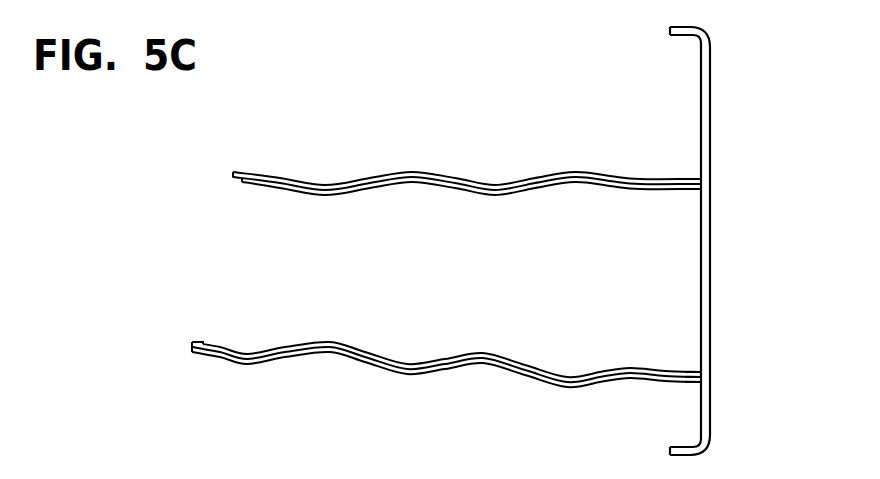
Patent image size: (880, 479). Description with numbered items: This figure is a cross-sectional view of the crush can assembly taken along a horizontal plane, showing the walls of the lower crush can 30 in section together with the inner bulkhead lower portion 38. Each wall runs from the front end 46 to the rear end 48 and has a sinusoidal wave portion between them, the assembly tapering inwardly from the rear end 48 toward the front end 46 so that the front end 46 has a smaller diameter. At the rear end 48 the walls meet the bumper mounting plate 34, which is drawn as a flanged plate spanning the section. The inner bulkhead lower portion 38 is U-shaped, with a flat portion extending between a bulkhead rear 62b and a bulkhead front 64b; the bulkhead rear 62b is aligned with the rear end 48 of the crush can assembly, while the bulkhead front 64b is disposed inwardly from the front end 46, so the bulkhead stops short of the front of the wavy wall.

The lower crush can 30 is at (558, 172).
The bumper mounting plate 34 is at (710, 75).
The inner bulkhead lower portion 38 is at (608, 190).
The front end 46 is at (192, 348).
The rear end 48 is at (701, 184).
The bulkhead rear 62b is at (702, 378).
The bulkhead front 64b is at (204, 342).